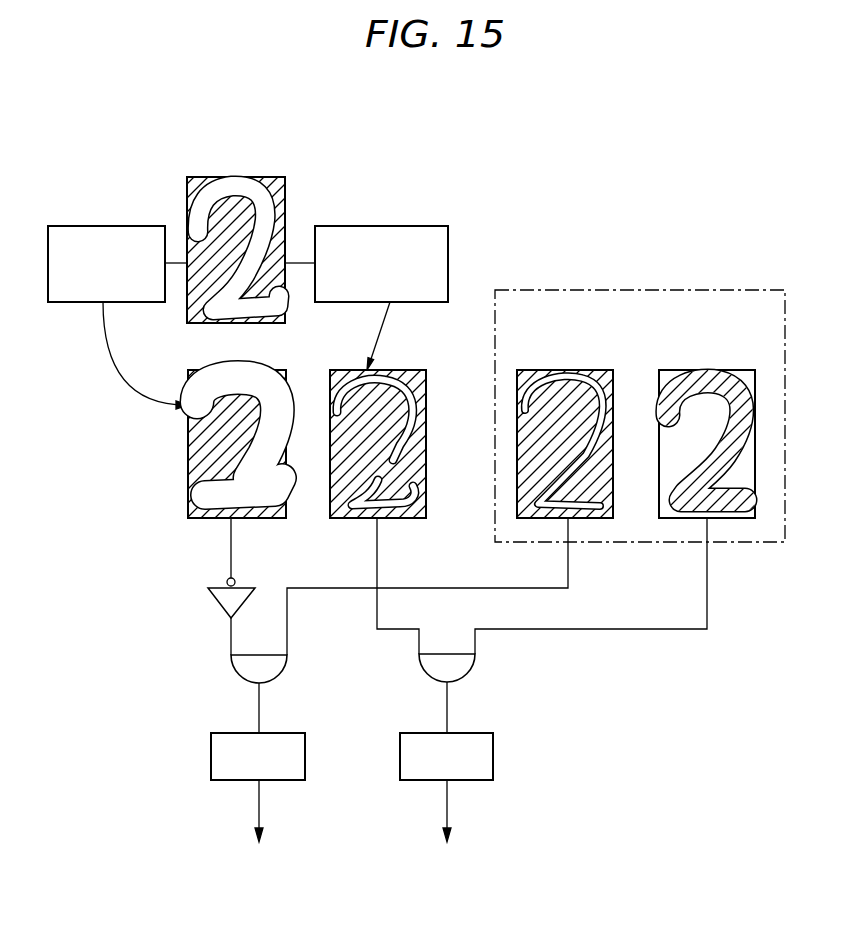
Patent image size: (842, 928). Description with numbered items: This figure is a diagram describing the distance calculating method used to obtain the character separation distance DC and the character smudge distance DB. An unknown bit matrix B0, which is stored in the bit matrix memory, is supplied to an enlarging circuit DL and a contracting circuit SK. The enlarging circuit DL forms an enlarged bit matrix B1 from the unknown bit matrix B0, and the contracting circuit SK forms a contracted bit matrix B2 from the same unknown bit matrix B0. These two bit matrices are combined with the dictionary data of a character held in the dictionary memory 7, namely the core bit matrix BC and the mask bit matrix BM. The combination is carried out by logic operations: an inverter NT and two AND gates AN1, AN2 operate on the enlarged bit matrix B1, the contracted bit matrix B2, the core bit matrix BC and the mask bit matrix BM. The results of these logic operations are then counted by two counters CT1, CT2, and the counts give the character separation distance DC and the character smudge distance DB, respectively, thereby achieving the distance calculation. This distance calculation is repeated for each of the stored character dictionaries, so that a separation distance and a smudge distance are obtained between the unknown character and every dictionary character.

The enlarging circuit DL is at (100, 226).
The contracting circuit SK is at (383, 226).
The unknown bit matrix B0 is at (243, 177).
The enlarged bit matrix B1 is at (253, 370).
The contracted bit matrix B2 is at (398, 370).
The dictionary memory 7 is at (637, 290).
The core bit matrix BC is at (565, 370).
The mask bit matrix BM is at (702, 370).
The inverter NT is at (248, 588).
The AND gate AN1 is at (288, 666).
The AND gate AN2 is at (476, 665).
The counter CT1 is at (305, 766).
The counter CT2 is at (493, 766).
The character separation distance DC is at (264, 831).
The character smudge distance DB is at (452, 831).